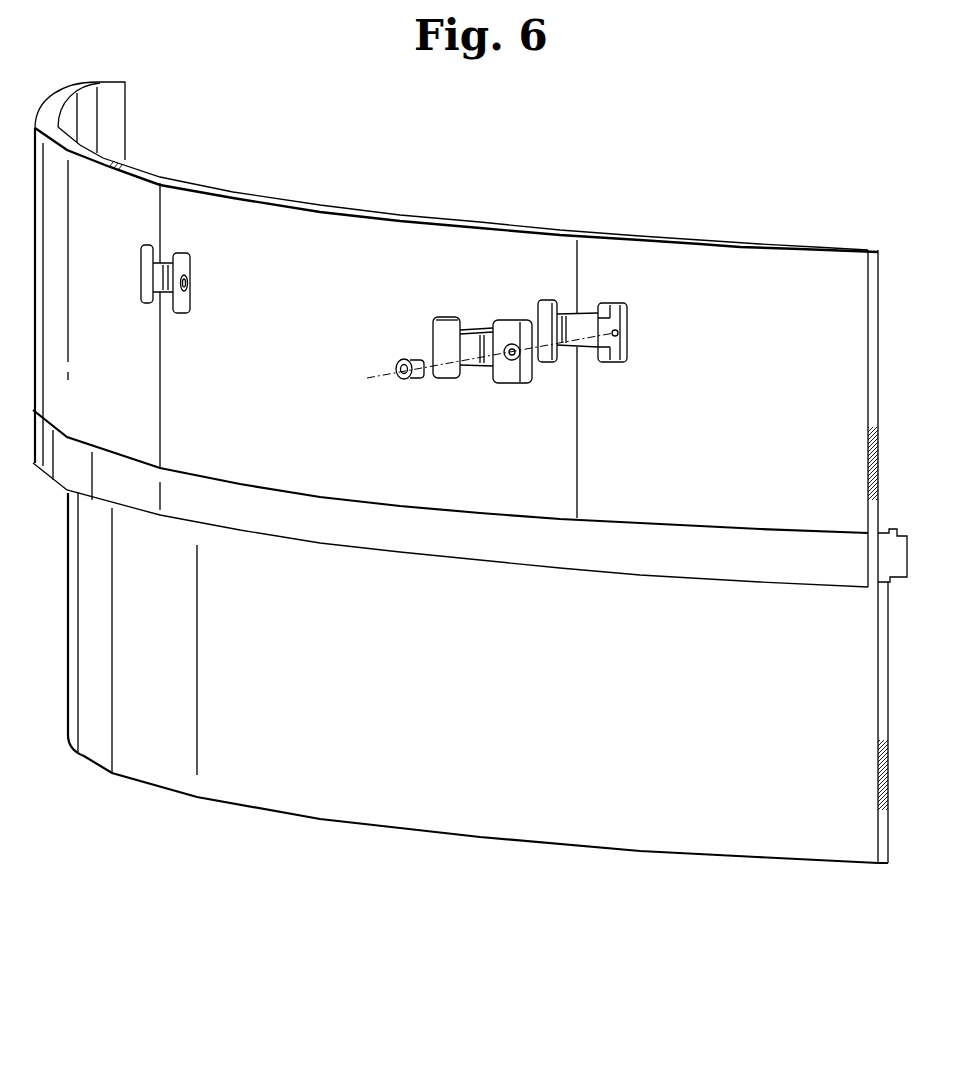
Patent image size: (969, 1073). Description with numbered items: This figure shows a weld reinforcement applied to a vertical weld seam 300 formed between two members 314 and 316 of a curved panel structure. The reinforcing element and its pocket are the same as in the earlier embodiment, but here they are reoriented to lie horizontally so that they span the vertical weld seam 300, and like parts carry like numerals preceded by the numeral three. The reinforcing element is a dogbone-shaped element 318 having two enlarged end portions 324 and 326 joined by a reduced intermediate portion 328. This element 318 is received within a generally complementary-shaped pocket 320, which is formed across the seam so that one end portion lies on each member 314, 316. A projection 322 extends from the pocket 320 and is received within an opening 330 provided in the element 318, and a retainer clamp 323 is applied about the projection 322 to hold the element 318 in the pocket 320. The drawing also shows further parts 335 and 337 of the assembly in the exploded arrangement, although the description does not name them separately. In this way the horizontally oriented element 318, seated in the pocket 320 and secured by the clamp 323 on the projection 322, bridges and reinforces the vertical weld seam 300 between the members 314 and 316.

The vertical weld seam 300 is at (577, 423).
The member 314 is at (357, 243).
The member 316 is at (766, 277).
The dogbone-shaped element 318 is at (478, 370).
The pocket 320 is at (631, 324).
The projection 322 is at (628, 312).
The retainer clamp 323 is at (400, 362).
The enlarged end portion 324 is at (440, 328).
The enlarged end portion 326 is at (513, 322).
The reduced intermediate portion 328 is at (468, 307).
The opening 330 is at (512, 362).
The lower recess 335 is at (594, 348).
The spacer plate 337 is at (550, 300).